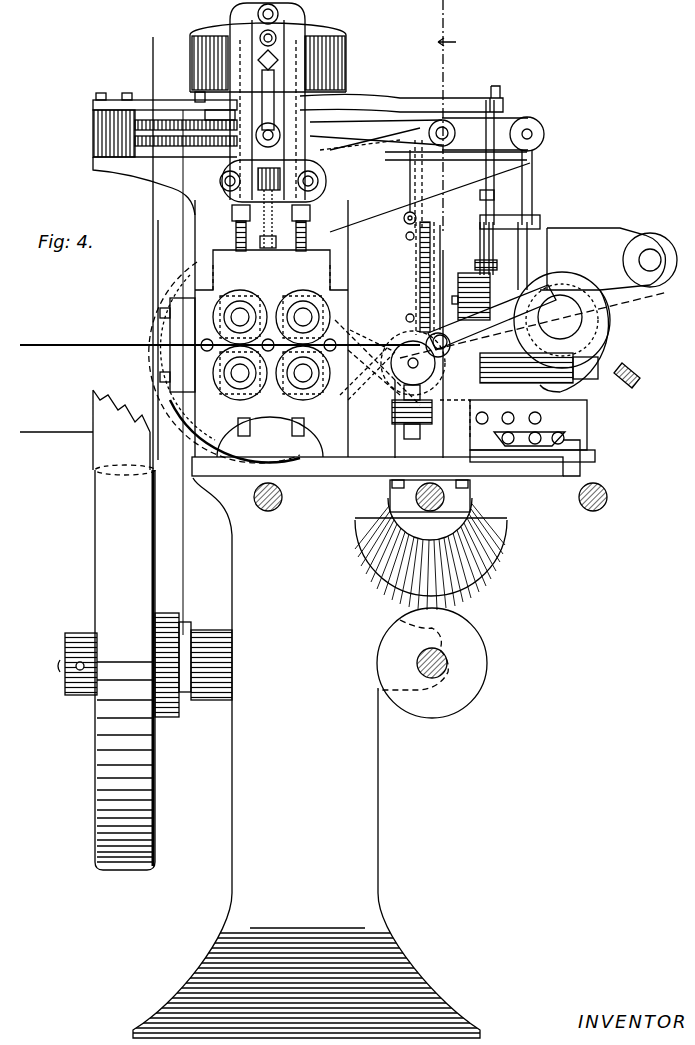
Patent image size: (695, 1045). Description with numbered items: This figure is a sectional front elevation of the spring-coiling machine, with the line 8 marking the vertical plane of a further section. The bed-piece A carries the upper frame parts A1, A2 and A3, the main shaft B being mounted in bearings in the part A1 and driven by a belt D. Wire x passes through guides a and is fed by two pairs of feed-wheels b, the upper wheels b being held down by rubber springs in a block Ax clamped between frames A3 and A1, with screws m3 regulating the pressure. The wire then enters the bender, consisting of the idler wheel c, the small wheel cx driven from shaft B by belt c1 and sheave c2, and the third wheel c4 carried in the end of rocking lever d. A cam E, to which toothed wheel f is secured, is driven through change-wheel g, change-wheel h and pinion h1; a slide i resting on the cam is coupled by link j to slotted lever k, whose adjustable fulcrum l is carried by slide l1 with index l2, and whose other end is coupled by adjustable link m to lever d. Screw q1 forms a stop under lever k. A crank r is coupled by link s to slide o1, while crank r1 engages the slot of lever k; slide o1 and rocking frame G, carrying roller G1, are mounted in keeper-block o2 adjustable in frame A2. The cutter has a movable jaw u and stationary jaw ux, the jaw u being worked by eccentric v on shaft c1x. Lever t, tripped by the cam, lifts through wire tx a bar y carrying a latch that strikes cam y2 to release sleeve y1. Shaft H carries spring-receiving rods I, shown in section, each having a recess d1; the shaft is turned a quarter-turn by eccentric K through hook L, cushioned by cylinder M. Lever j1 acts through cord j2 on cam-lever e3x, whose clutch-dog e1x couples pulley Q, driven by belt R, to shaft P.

The bed-piece A is at (350, 739).
The pulley Q is at (95, 750).
The belt R is at (93, 433).
The transversely-arranged shaft P is at (65, 665).
The cam-lever e3x is at (185, 630).
The clutch-dog e1x is at (208, 640).
The wire or cord j2 is at (183, 540).
The belt D is at (153, 272).
The spring-receiving rods I is at (268, 512).
The shaft H is at (425, 512).
The wire x is at (108, 345).
The frame part A3 is at (273, 308).
The block Ax is at (338, 280).
The change-wheel g is at (150, 186).
The screws m3 is at (232, 212).
The screw q1 is at (260, 240).
The cam E is at (276, 57).
The slide i is at (280, 45).
The toothed wheel f is at (268, 144).
The link j is at (256, 100).
The lever j1 is at (195, 100).
The change-wheel h is at (185, 126).
The pinion h1 is at (220, 105).
The lever t is at (401, 92).
The crank r1 is at (333, 118).
The index or point l2 is at (445, 120).
The slide l1 is at (450, 160).
The adjustable fulcrum l is at (420, 185).
The slotted lever k is at (395, 150).
The crank r is at (375, 157).
The section line 8 is at (446, 116).
The cam y2 is at (515, 172).
The adjustable link m is at (535, 186).
The rod, wire, or cord tx is at (480, 196).
The link s is at (415, 187).
The feed-wheels b is at (245, 296).
The guides a is at (312, 343).
The main shaft B is at (246, 428).
The sheave c2 is at (180, 412).
The frame part A1 is at (377, 362).
The frame part A2 is at (400, 354).
The slide o1 is at (406, 234).
The keeper-block o2 is at (390, 300).
The rocking frame G is at (436, 236).
The anti-friction roller G1 is at (440, 262).
The upper stationary jaw ux is at (469, 293).
The bar y is at (482, 246).
The sleeve y1 is at (528, 238).
The eccentric K is at (622, 325).
The rocking lever d is at (562, 320).
The eccentric v is at (568, 320).
The shaft c1x is at (534, 319).
The lower movable jaw u is at (492, 320).
The larger wheel c is at (413, 363).
The third wheel c4 is at (444, 354).
The belt c1 is at (385, 332).
The small wheel cx is at (367, 372).
The cylinder M is at (480, 383).
The hook L is at (448, 455).
The notch or recess d1 is at (412, 456).